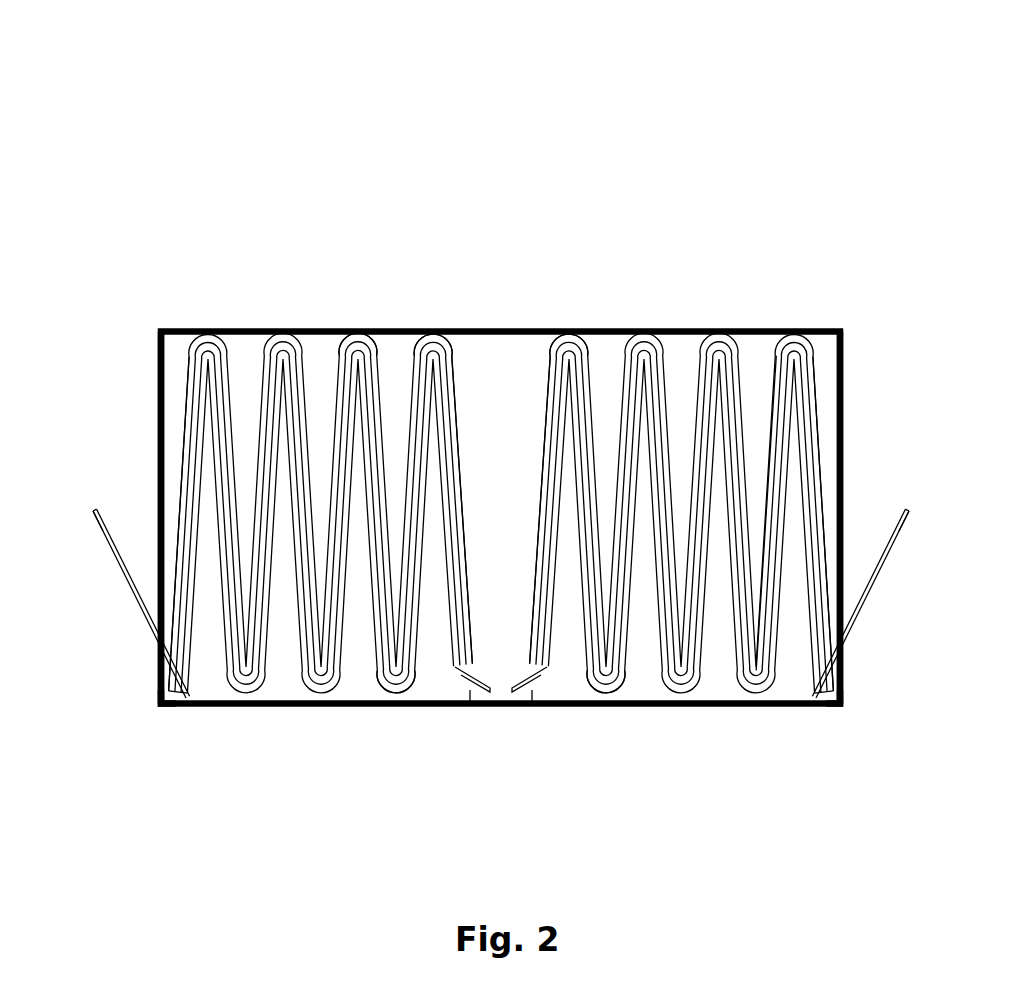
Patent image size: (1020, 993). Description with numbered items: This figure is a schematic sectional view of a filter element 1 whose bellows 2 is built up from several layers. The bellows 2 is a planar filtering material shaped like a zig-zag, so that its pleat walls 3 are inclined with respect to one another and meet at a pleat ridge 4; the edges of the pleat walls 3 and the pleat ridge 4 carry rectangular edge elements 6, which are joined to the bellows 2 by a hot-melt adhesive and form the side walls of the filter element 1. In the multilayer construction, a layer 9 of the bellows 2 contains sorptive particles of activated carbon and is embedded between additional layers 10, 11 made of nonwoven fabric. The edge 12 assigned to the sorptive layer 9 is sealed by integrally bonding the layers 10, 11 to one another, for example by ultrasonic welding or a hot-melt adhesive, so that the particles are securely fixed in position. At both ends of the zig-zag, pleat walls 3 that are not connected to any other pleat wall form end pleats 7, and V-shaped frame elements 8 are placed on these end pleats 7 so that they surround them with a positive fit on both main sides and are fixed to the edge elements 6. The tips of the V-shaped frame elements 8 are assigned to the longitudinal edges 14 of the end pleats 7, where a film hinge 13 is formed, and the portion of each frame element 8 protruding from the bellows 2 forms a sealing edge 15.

The filter element 1 is at (339, 130).
The bellows 2 is at (232, 360).
The pleat walls 3 is at (665, 432).
The pleat ridge 4 is at (367, 338).
The edge elements 6 is at (757, 392).
The end pleats 7 is at (182, 483).
The frame elements 8 is at (107, 553).
The layer comprising sorptive particles 9 is at (547, 432).
The additional layer 10 is at (550, 331).
The additional layer 11 is at (603, 684).
The edge 12 is at (161, 706).
The film hinge 13 is at (186, 700).
The longitudinal edges 14 is at (160, 600).
The sealing edge 15 is at (93, 512).